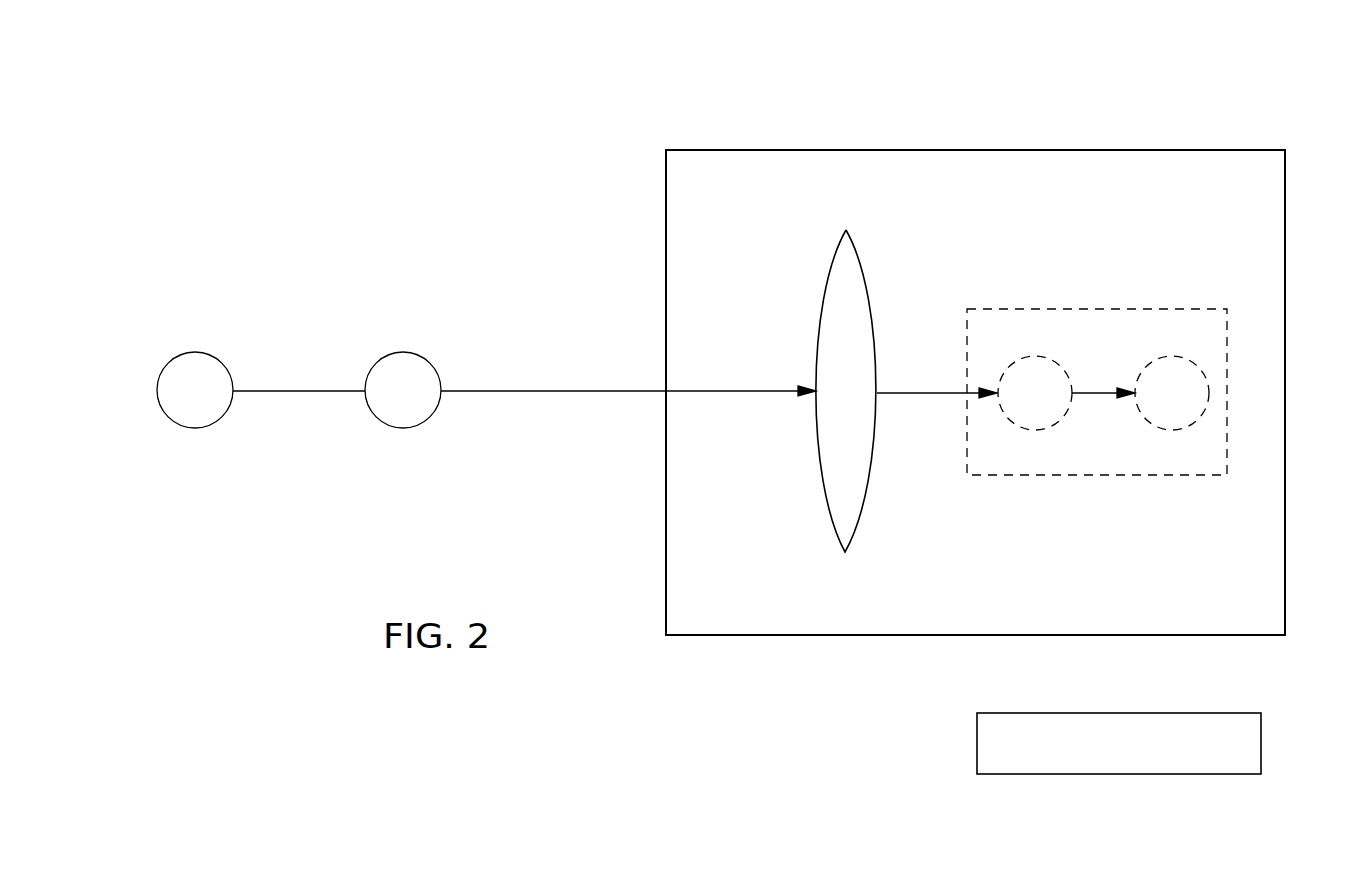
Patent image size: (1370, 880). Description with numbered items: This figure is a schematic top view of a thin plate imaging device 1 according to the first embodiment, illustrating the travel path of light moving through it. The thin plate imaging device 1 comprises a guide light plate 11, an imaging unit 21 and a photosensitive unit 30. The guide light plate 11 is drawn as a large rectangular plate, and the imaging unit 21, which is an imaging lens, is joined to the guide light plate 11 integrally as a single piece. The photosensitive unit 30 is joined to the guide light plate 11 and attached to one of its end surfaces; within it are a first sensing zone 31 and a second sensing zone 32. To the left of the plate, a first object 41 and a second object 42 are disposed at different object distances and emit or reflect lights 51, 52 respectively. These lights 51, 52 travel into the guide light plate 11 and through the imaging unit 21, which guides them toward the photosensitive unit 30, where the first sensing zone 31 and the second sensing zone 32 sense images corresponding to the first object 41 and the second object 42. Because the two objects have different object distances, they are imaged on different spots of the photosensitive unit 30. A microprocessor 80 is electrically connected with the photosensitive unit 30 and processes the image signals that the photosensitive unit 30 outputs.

The thin plate imaging device 1 is at (1000, 132).
The guide light plate 11 is at (714, 178).
The imaging unit 21 is at (847, 527).
The photosensitive unit 30 is at (990, 460).
The first sensing zone 31 is at (1045, 415).
The second sensing zone 32 is at (1170, 418).
The first object 41 is at (197, 412).
The second object 42 is at (405, 412).
The light 51 is at (297, 392).
The light 52 is at (552, 392).
The microprocessor 80 is at (1256, 728).